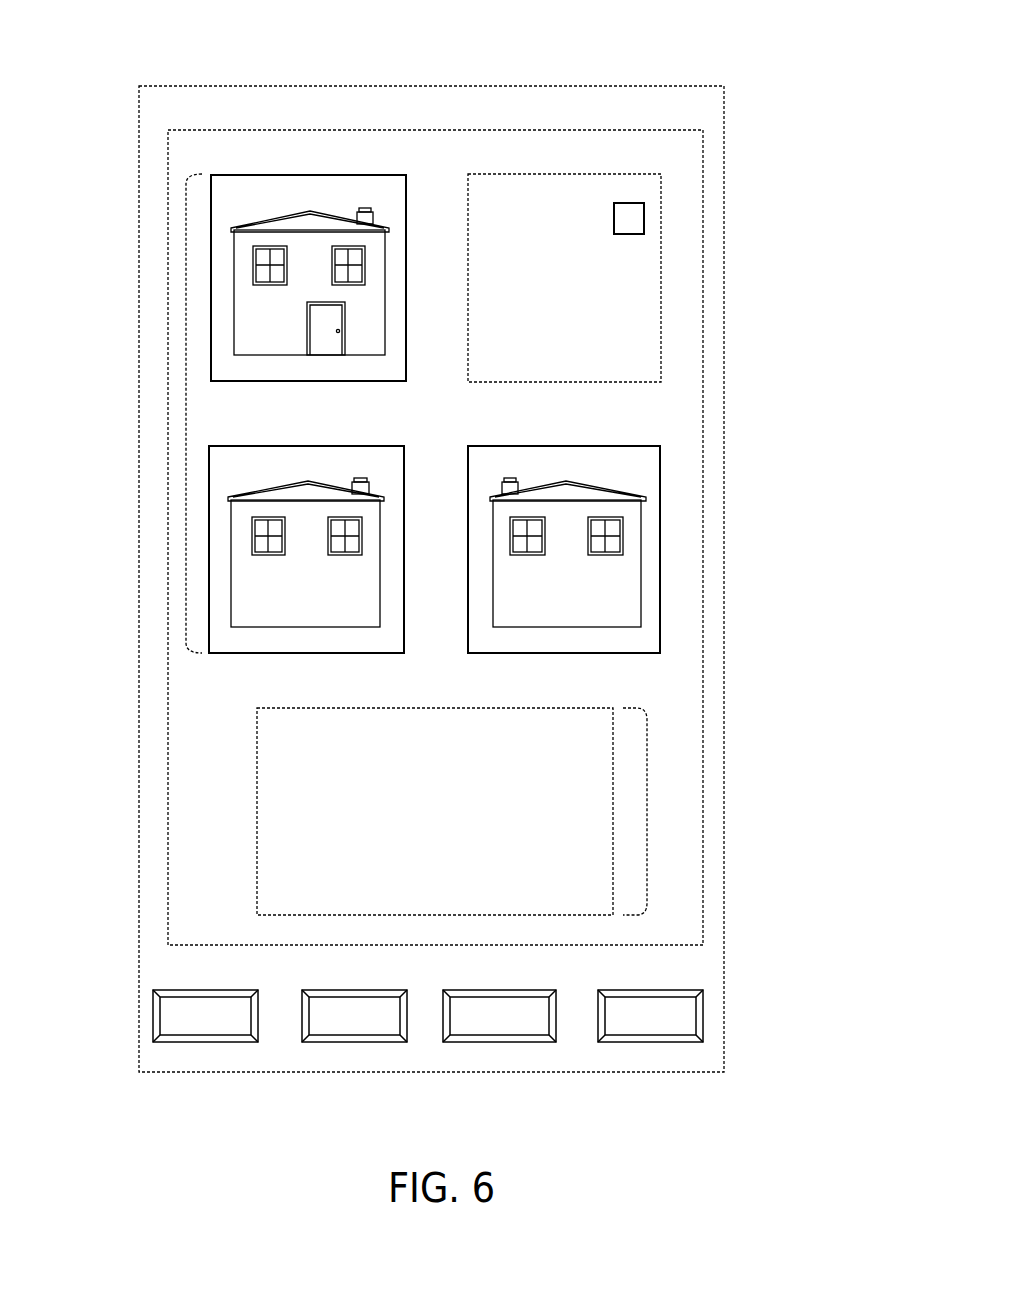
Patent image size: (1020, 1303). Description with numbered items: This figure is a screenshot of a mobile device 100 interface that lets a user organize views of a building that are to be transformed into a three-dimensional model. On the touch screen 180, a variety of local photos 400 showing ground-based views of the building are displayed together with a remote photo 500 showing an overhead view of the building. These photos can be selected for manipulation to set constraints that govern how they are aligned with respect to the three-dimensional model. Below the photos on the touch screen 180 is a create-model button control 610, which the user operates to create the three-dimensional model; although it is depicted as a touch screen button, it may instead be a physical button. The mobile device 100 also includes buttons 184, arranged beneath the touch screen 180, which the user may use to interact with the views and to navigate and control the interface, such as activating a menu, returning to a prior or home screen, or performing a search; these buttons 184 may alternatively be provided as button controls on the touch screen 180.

The mobile device 100 is at (346, 39).
The touch screen 180 is at (380, 496).
The local photos 400 is at (343, 413).
The remote photo 500 is at (610, 211).
The create 3D model button control 610 is at (545, 796).
The buttons 184 is at (703, 1055).